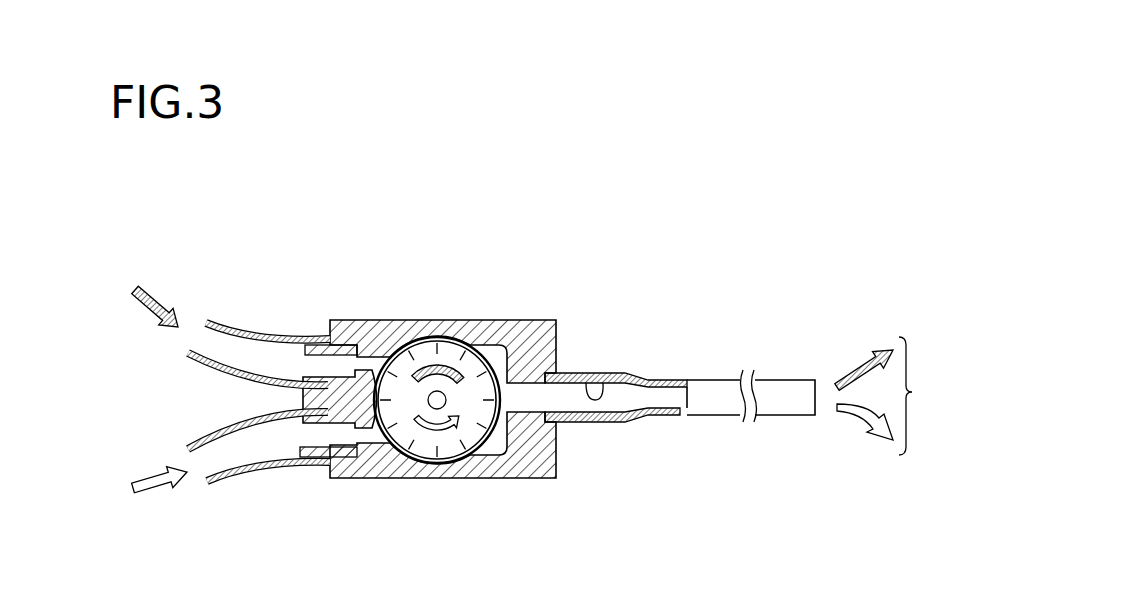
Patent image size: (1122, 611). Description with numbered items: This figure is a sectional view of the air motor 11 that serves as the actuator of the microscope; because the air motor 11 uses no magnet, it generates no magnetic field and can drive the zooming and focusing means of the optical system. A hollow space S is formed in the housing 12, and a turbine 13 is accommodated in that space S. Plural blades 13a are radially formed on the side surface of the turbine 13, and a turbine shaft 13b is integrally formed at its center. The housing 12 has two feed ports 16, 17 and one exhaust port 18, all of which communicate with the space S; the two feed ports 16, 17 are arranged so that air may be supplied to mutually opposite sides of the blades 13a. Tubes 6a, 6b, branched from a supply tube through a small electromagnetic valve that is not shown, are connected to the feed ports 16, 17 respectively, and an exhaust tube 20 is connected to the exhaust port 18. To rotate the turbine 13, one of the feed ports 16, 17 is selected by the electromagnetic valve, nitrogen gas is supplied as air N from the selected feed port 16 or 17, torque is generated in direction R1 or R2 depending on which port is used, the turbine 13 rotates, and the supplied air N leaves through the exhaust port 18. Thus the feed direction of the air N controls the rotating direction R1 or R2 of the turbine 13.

The air motor 11 is at (462, 247).
The housing 12 is at (347, 320).
The turbine 13 is at (489, 332).
The blades 13a is at (413, 463).
The turbine shaft 13b is at (448, 375).
The feed port 16 is at (292, 345).
The feed port 17 is at (302, 447).
The exhaust port 18 is at (602, 383).
The exhaust tube 20 is at (710, 380).
The tube 6a is at (227, 320).
The tube 6b is at (228, 484).
The rotating direction R1 is at (424, 370).
The rotating direction R2 is at (437, 460).
The hollow space S is at (491, 456).
The air N is at (520, 383).